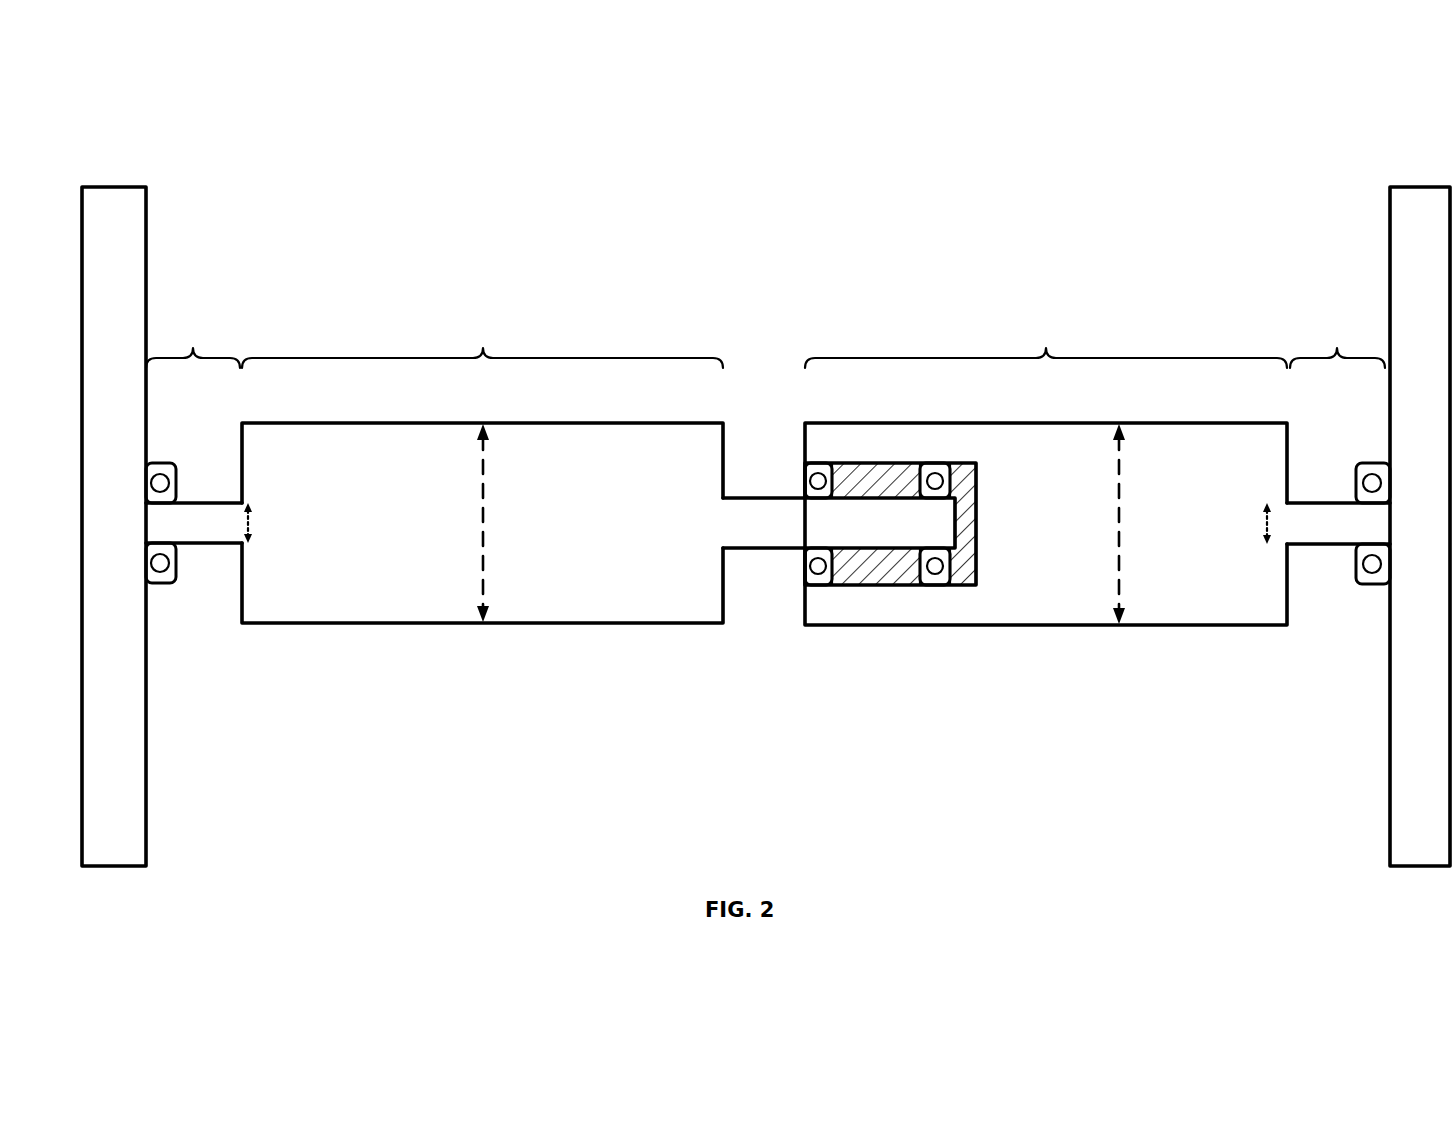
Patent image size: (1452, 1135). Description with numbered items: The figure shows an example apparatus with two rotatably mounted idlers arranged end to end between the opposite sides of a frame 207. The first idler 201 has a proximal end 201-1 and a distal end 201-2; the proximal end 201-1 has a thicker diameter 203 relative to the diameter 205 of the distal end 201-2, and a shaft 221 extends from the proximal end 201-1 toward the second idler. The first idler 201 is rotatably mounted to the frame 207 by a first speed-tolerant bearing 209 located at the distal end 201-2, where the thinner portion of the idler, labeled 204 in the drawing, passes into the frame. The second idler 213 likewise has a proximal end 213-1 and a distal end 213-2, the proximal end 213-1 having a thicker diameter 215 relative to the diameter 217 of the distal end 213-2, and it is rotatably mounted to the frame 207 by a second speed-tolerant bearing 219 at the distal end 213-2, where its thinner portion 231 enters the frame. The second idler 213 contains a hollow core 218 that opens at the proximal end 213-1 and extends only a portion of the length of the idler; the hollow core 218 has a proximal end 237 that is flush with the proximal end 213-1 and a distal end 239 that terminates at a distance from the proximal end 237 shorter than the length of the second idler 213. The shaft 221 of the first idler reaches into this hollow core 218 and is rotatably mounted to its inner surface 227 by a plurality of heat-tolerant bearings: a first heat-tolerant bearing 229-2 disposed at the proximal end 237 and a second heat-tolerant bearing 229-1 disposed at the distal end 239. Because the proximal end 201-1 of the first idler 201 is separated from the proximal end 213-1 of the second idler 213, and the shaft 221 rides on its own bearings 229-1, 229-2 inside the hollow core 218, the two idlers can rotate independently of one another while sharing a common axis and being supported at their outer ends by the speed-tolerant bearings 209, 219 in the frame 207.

The first idler 201 is at (292, 460).
The proximal end 201-1 is at (482, 343).
The distal end 201-2 is at (193, 343).
The diameter 203 is at (482, 523).
The first shaft 204 is at (205, 546).
The diameter 205 is at (268, 523).
The frame 207 is at (100, 187).
The first speed-tolerant bearing 209 is at (158, 585).
The second idler 213 is at (1277, 460).
The proximal end 213-1 is at (1046, 343).
The distal end 213-2 is at (1337, 343).
The diameter 215 is at (1120, 524).
The diameter 217 is at (1243, 523).
The hollow core 218 is at (878, 572).
The second speed-tolerant bearing 219 is at (1370, 586).
The shaft 221 is at (770, 496).
The inner surface 227 is at (904, 458).
The second heat-tolerant bearing 229-1 is at (928, 588).
The first heat-tolerant bearing 229-2 is at (810, 588).
The second shaft 231 is at (1313, 547).
The proximal end 237 is at (790, 570).
The distal end 239 is at (984, 548).